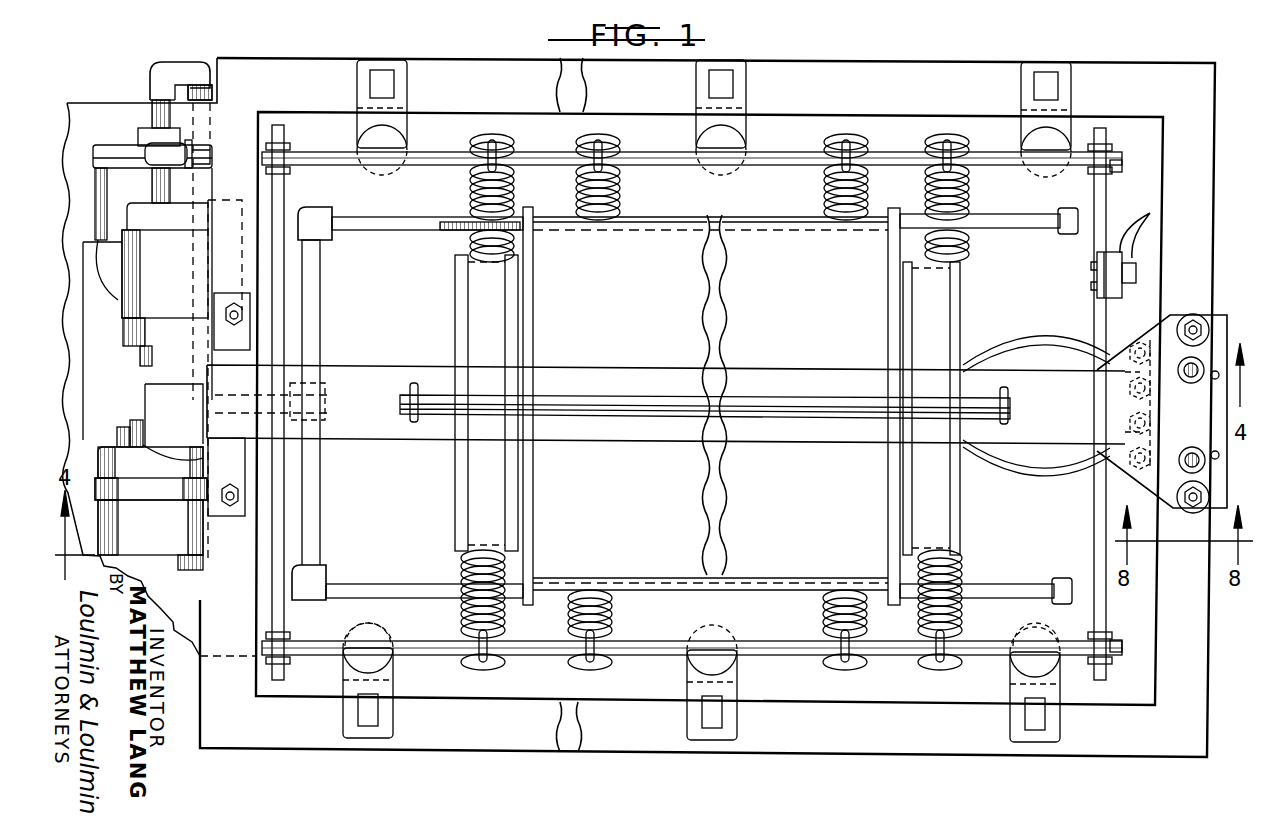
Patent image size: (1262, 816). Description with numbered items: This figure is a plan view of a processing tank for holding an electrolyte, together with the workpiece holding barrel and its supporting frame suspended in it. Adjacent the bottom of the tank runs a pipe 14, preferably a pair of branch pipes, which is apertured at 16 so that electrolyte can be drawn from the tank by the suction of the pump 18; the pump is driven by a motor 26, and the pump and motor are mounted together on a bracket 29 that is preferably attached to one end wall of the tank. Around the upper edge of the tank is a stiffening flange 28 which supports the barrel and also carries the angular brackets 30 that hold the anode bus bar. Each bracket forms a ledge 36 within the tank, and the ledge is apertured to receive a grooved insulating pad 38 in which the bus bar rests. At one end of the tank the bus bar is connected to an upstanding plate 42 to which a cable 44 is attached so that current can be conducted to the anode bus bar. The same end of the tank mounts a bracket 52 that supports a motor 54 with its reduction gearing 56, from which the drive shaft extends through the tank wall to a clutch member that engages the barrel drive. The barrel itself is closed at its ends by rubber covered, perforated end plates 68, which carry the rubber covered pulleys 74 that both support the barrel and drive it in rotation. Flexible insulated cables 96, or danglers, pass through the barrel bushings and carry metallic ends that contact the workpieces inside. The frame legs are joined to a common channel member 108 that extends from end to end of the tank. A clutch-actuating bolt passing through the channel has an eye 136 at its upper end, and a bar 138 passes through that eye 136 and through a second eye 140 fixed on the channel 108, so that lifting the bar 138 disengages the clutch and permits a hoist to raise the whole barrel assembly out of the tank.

The pipe 14 is at (362, 230).
The apertures 16 is at (445, 230).
The pump 18 is at (117, 210).
The motor 26 is at (120, 456).
The stiffening flange 28 is at (868, 96).
The bracket 29 is at (118, 110).
The brackets 30 is at (398, 120).
The ledge 36 is at (359, 150).
The insulating pad 38 is at (362, 628).
The upstanding plate 42 is at (1114, 296).
The cable 44 is at (1142, 218).
The bracket 52 is at (112, 356).
The motor 54 is at (140, 312).
The reduction gearing 56 is at (126, 406).
The end plates 68 is at (534, 305).
The pulleys 74 is at (466, 320).
The flexible cables 96 is at (1056, 342).
The channel member 108 is at (348, 438).
The eye 136 is at (410, 420).
The bar 138 is at (588, 402).
The second eye 140 is at (1008, 403).